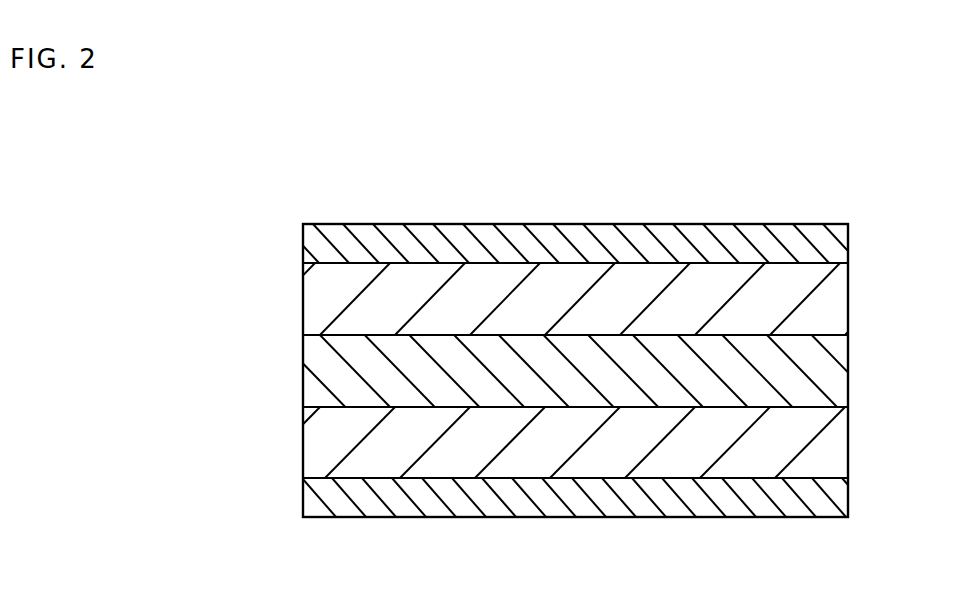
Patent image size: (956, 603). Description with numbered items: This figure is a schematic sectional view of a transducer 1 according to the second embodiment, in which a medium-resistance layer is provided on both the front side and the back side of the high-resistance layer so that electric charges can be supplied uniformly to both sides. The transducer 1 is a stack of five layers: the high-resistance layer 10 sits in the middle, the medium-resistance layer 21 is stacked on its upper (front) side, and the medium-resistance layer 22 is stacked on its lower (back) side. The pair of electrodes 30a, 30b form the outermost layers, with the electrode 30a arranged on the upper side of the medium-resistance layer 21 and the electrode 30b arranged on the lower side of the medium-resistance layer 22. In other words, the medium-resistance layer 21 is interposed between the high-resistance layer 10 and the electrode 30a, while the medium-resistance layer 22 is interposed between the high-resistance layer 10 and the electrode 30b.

The transducer 1 is at (795, 183).
The high-resistance layer 10 is at (312, 377).
The medium-resistance layer 21 is at (312, 300).
The medium-resistance layer 22 is at (312, 453).
The electrode 30a is at (515, 237).
The electrode 30b is at (515, 500).